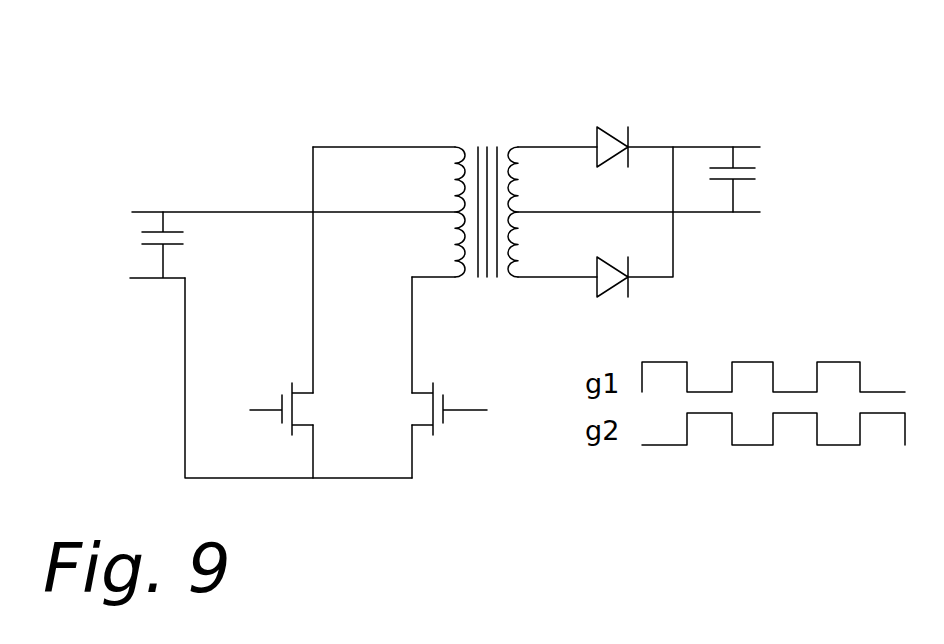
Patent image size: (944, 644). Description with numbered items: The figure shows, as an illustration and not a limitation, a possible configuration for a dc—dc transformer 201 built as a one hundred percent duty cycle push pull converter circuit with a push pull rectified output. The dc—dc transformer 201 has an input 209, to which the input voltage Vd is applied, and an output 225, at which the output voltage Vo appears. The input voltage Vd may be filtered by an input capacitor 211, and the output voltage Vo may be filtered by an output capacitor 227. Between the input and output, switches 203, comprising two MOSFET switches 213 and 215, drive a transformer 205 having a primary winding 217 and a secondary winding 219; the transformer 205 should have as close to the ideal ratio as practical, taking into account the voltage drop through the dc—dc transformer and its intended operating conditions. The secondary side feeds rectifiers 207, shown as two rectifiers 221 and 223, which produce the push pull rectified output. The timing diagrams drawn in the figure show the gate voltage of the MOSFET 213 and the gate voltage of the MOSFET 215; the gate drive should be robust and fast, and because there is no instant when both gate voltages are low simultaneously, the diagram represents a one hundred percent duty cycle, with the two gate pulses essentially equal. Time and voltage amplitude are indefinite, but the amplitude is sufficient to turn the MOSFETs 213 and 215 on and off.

The dc—dc transformer 201 is at (183, 132).
The switches 203 is at (363, 457).
The transformer 205 is at (477, 127).
The rectifiers 207 is at (588, 102).
The input 209 is at (122, 212).
The input capacitor 211 is at (132, 252).
The MOSFET switch 213 is at (295, 450).
The MOSFET switch 215 is at (438, 440).
The primary winding 217 is at (423, 168).
The secondary winding 219 is at (525, 180).
The rectifier 221 is at (640, 132).
The rectifier 223 is at (608, 302).
The output 225 is at (772, 145).
The output capacitor 227 is at (757, 185).